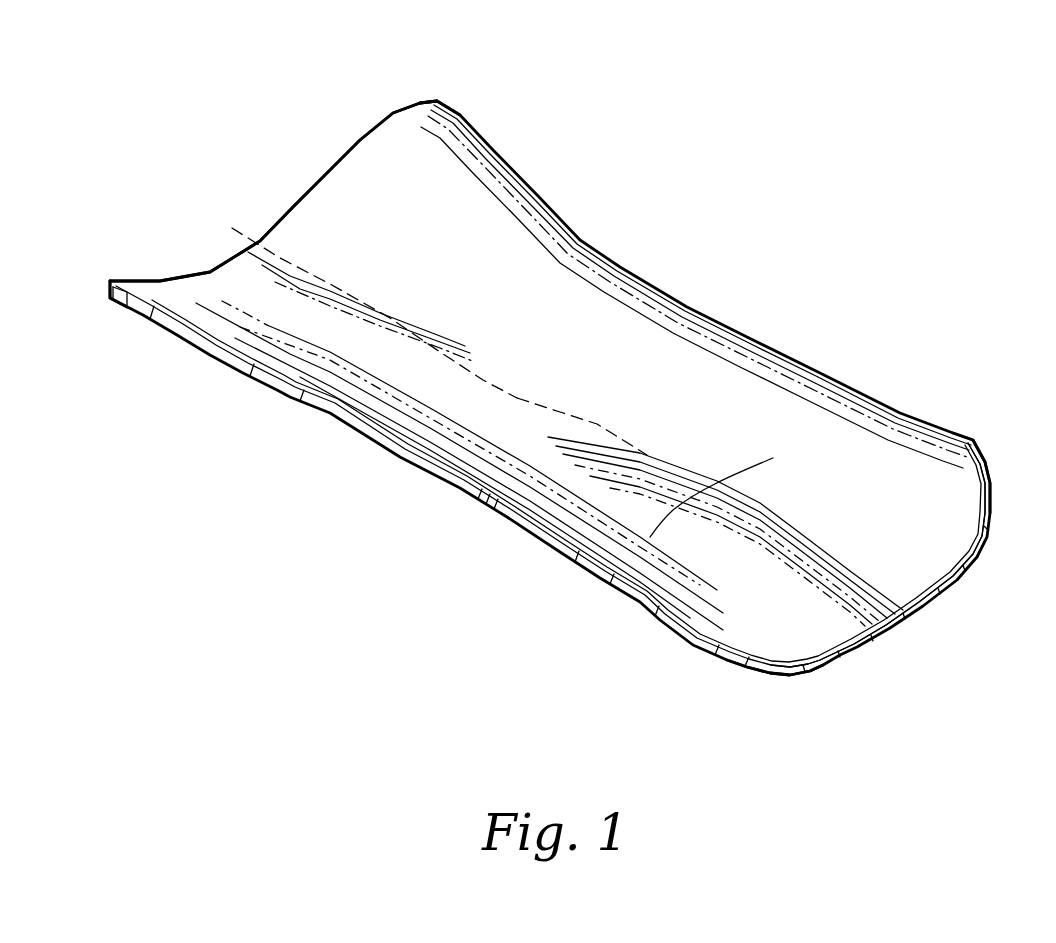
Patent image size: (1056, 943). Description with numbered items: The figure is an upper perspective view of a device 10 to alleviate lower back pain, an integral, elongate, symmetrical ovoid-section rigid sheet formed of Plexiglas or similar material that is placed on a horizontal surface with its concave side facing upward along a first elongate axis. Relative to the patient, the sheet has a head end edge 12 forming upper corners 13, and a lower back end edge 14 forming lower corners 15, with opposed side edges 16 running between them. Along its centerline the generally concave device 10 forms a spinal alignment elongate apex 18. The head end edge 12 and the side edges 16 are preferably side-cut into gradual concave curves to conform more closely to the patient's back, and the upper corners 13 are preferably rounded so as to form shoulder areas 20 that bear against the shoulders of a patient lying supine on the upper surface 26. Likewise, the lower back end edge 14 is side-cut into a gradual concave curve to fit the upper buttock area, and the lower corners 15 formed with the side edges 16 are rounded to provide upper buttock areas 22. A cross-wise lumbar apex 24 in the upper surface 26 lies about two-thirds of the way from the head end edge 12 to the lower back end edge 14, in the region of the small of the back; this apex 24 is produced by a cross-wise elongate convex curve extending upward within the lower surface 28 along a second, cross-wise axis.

The device to alleviate lower back pain 10 is at (753, 190).
The head end edge 12 is at (322, 178).
The upper corners 13 is at (433, 100).
The lower back end edge 14 is at (930, 607).
The lower corners 15 is at (978, 445).
The side edges 16 is at (790, 336).
The spinal alignment elongate apex 18 is at (245, 236).
The shoulder areas 20 is at (419, 206).
The upper buttock areas 22 is at (928, 508).
The lumbar apex 24 is at (717, 483).
The upper surface 26 is at (553, 353).
The lower surface 28 is at (290, 397).